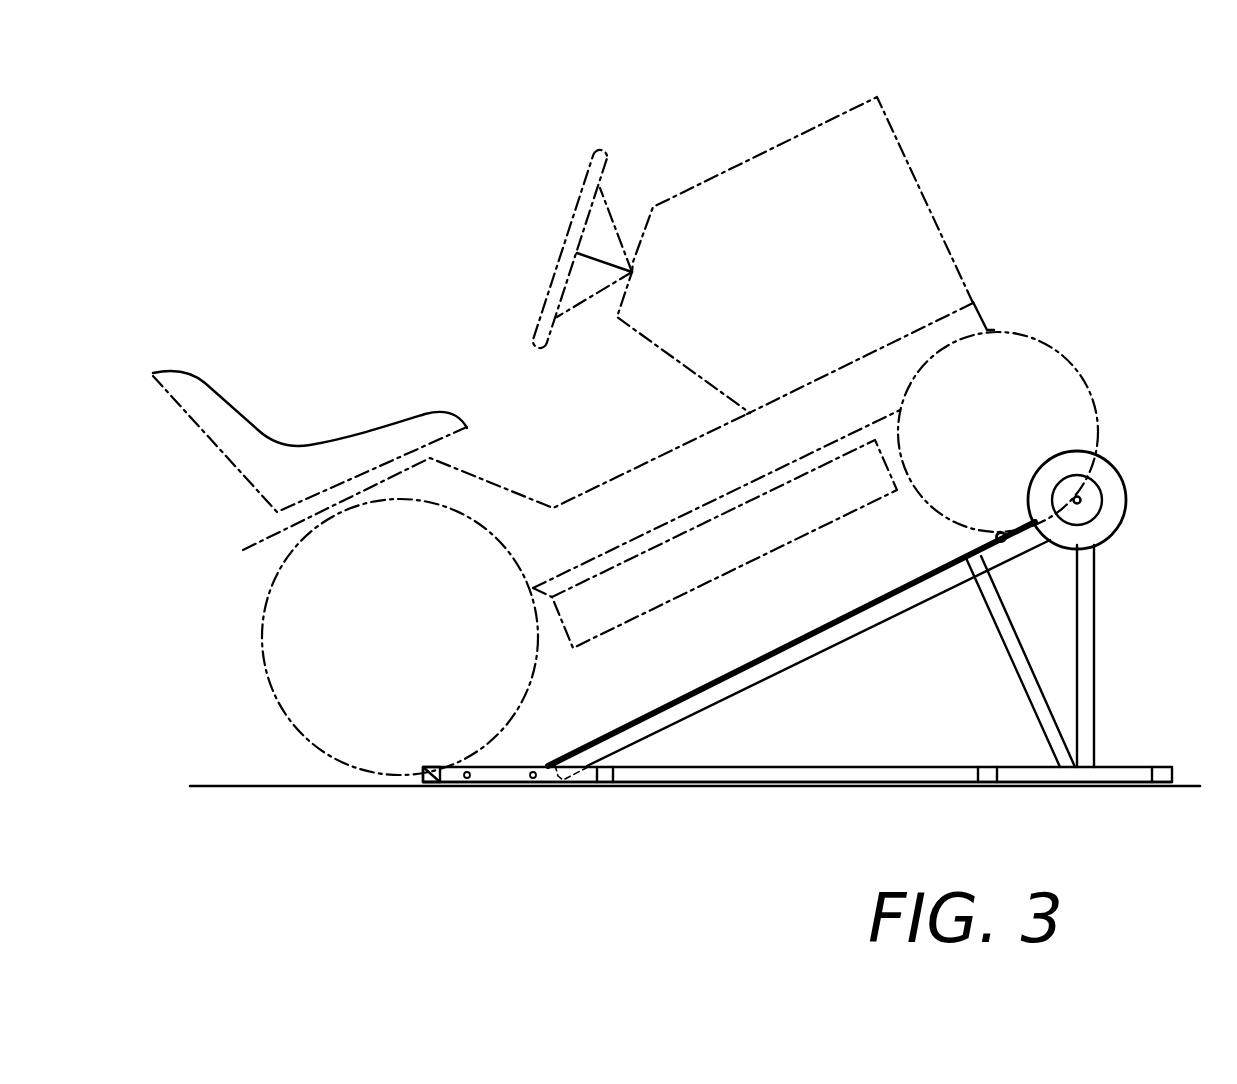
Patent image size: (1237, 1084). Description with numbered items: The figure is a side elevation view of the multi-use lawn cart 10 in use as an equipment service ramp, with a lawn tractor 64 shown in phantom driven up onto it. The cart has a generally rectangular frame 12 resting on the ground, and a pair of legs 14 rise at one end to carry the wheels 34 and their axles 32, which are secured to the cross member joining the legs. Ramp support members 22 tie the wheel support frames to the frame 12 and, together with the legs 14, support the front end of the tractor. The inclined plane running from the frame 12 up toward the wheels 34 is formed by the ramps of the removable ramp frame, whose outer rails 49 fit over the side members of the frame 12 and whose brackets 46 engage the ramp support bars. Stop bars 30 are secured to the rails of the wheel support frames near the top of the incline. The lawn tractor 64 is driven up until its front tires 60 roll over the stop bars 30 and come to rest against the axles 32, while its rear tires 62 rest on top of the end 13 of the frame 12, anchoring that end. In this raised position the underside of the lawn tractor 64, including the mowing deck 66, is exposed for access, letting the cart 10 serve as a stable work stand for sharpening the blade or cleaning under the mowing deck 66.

The multi-use lawn cart 10 is at (1141, 567).
The frame 12 is at (1120, 764).
The end of frame 13 is at (426, 765).
The legs 14 is at (1097, 644).
The ramp support members 22 is at (1010, 660).
The stop bars 30 is at (1003, 542).
The axles 32 is at (1082, 505).
The wheels 34 is at (1112, 465).
The brackets 46 is at (958, 566).
The outer rails 49 is at (803, 660).
The front tires 60 is at (1062, 357).
The rear tires 62 is at (266, 628).
The lawn tractor 64 is at (898, 140).
The mowing deck 66 is at (680, 599).